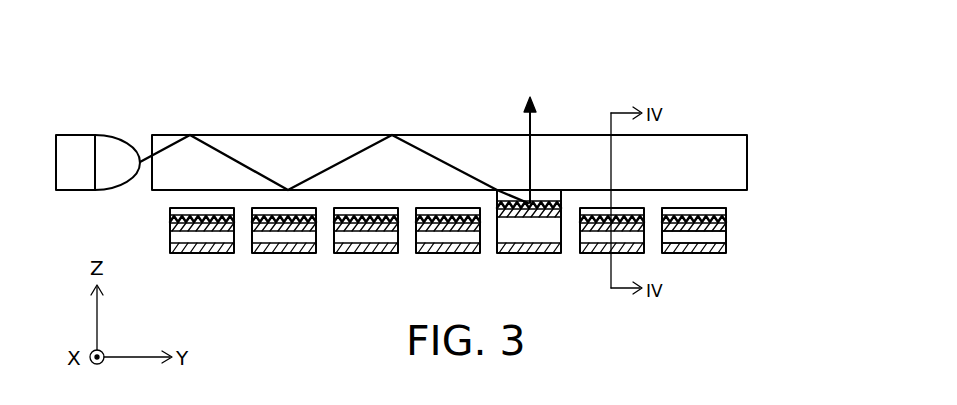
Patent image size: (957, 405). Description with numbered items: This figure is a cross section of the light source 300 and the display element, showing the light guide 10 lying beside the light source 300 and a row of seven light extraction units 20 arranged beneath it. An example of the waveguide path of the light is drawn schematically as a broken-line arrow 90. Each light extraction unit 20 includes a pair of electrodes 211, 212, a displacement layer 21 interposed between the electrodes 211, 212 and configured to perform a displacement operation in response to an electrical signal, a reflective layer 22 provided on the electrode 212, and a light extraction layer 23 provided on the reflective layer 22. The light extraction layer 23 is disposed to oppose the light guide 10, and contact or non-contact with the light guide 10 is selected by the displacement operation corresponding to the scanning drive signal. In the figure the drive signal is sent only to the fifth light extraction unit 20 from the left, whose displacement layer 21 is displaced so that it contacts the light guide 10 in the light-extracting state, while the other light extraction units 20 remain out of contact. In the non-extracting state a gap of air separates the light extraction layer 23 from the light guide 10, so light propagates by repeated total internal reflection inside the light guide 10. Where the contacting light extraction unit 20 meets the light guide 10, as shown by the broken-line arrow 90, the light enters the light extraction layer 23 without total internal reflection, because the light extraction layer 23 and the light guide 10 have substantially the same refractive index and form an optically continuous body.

The light source 300 is at (110, 150).
The light guide 10 is at (280, 153).
The broken-line arrow 90 is at (423, 150).
The light extraction unit 20 is at (521, 255).
The light extraction layer 23 is at (734, 207).
The reflective layer 22 is at (734, 230).
The electrode 212 is at (741, 245).
The displacement layer 21 is at (734, 261).
The electrode 211 is at (741, 279).